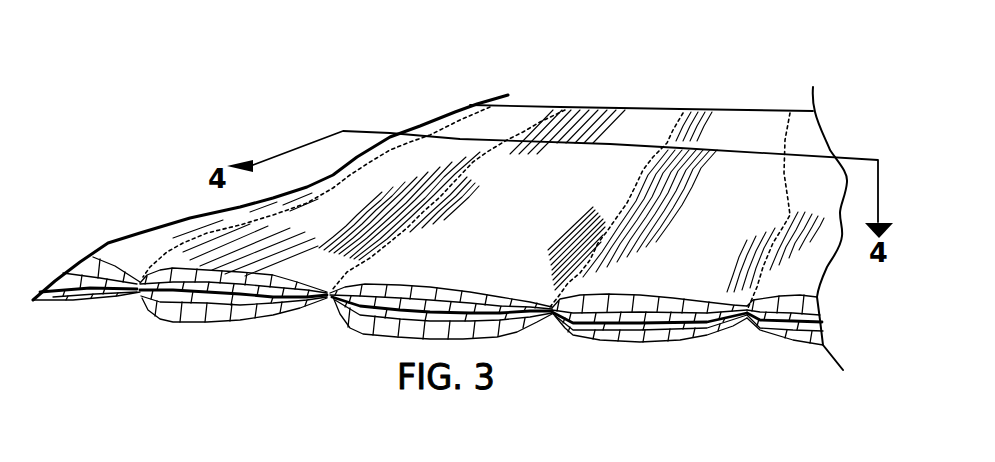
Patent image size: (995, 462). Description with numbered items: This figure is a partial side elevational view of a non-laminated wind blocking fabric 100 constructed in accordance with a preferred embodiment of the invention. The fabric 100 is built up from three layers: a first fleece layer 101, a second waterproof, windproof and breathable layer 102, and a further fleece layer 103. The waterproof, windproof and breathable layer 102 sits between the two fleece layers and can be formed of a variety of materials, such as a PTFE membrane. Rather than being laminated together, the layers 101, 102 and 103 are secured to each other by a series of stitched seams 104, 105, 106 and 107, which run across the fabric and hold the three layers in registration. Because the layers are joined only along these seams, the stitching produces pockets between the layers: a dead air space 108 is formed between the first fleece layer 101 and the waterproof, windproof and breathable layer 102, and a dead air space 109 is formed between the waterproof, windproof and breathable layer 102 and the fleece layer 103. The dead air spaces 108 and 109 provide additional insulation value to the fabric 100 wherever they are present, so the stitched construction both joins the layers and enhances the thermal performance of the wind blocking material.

The non-laminated wind blocking fabric 100 is at (655, 64).
The first fleece layer 101 is at (817, 307).
The second waterproof, windproof and breathable layer 102 is at (692, 338).
The fleece layer 103 is at (633, 342).
The stitched seam 104 is at (484, 110).
The stitched seam 105 is at (527, 127).
The stitched seam 106 is at (687, 116).
The stitched seam 107 is at (790, 113).
The dead air space 108 is at (165, 310).
The dead air space 109 is at (203, 307).